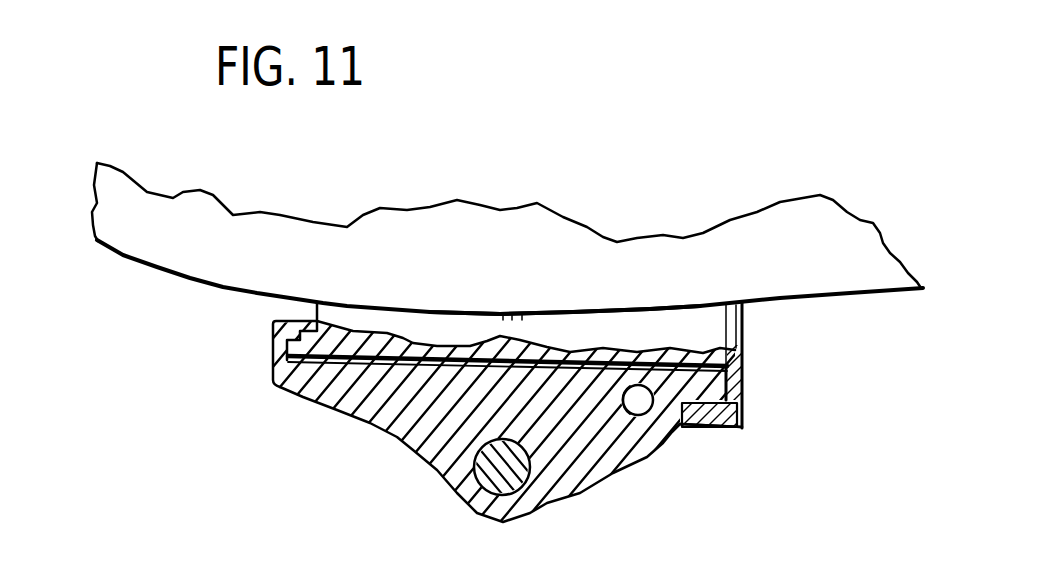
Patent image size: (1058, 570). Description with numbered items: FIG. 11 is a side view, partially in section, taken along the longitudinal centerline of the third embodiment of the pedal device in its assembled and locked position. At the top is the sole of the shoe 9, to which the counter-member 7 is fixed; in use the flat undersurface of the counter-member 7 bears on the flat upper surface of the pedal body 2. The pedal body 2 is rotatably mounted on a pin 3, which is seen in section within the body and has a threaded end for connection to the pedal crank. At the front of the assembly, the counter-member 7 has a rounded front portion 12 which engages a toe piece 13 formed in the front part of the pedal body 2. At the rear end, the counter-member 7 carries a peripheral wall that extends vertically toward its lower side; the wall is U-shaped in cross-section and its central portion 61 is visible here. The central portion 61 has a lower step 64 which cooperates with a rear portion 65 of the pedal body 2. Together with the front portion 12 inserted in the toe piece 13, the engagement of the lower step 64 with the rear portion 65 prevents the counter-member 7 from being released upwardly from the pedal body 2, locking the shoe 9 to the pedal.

The shoe 9 is at (190, 217).
The counter-member 7 is at (573, 310).
The toe piece 13 is at (290, 322).
The rounded front portion 12 is at (297, 372).
The pedal body 2 is at (397, 440).
The pin 3 is at (527, 485).
The central portion 61 is at (738, 380).
The rear portion 65 is at (740, 428).
The lower step 64 is at (707, 428).